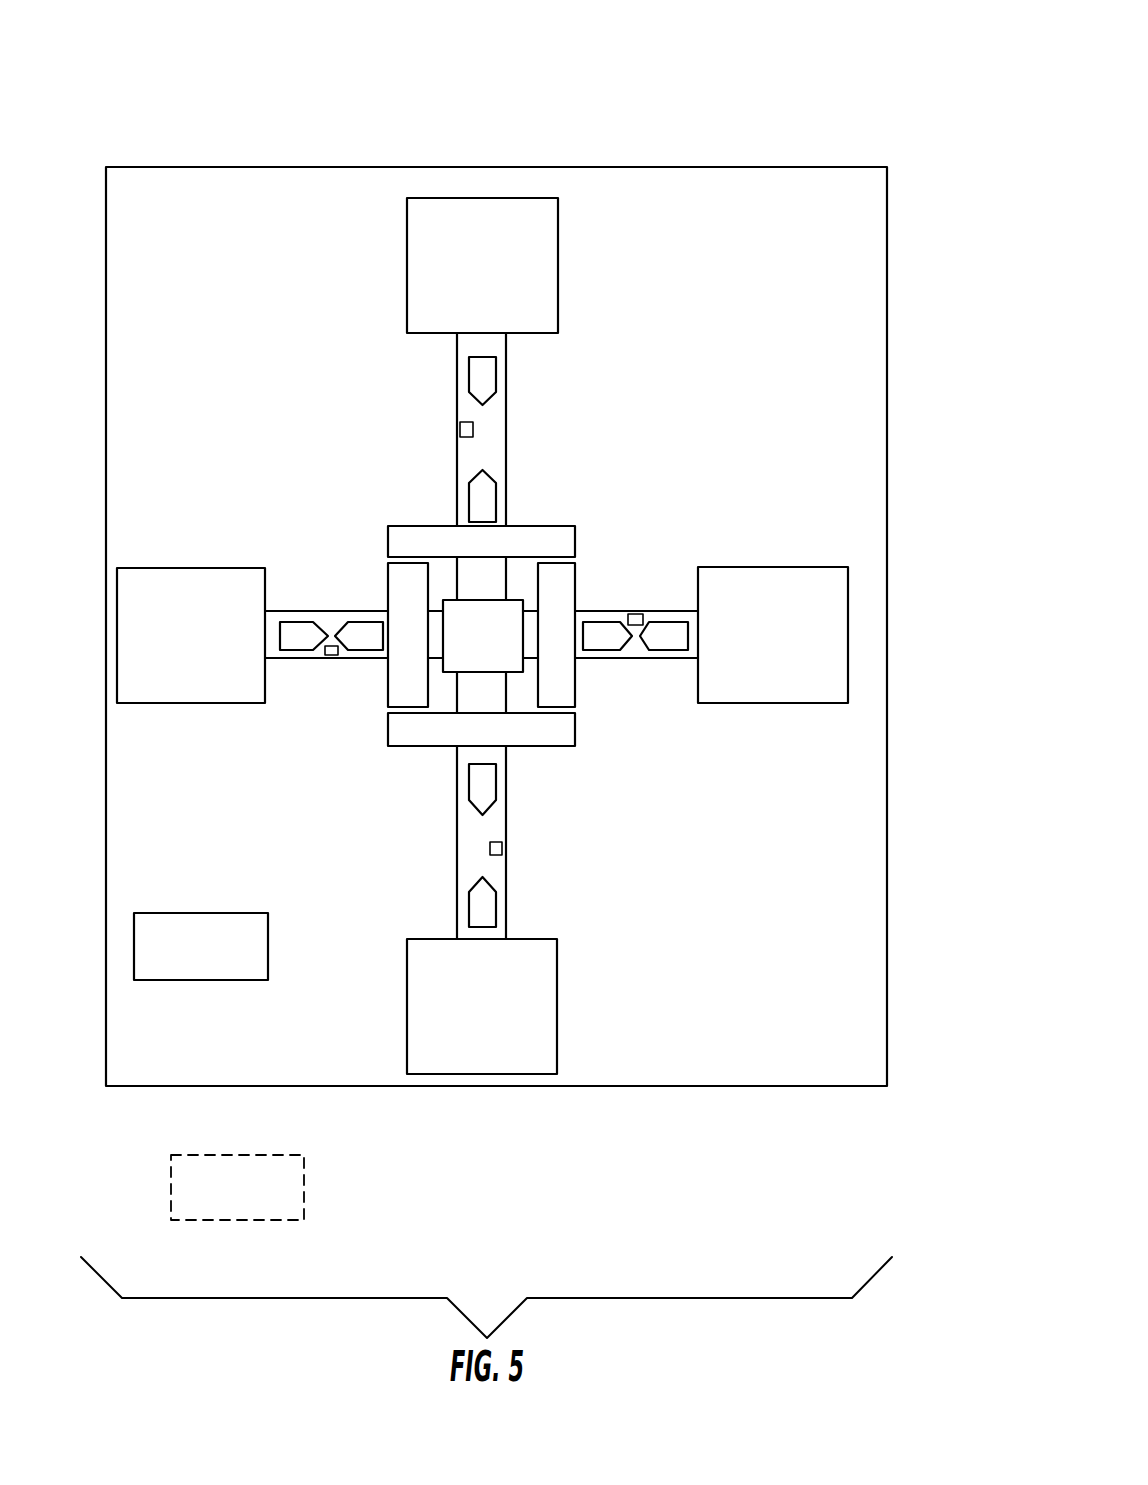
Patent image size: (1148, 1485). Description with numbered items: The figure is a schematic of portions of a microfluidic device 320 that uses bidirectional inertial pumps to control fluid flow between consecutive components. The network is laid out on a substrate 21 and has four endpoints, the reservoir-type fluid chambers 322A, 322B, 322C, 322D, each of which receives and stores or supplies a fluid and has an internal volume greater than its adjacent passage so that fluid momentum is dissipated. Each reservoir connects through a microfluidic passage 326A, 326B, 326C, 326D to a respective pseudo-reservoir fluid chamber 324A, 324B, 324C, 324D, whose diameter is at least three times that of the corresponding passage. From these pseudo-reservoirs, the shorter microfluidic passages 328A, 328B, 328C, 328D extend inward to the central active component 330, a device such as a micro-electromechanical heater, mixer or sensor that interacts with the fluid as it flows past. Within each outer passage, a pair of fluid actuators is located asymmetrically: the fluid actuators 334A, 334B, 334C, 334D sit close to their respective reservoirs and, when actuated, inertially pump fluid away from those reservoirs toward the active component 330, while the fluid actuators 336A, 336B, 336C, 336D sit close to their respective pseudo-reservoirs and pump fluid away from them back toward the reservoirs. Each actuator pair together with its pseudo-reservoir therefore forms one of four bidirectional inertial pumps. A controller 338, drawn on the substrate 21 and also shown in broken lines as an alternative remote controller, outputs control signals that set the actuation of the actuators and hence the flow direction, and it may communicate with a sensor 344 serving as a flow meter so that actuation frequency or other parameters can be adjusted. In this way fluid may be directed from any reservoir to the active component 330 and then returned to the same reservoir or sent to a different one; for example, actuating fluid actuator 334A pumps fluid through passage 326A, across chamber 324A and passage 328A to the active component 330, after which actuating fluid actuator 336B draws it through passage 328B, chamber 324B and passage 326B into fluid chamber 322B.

The microfluidic device 320 is at (185, 84).
The substrate 21 is at (106, 314).
The fluid chamber 322A is at (144, 567).
The fluid chamber 322B is at (493, 198).
The fluid chamber 322C is at (848, 627).
The fluid chamber 322D is at (557, 1057).
The fluid chamber 324A is at (386, 577).
The fluid chamber 324B is at (567, 526).
The fluid chamber 324C is at (580, 697).
The fluid chamber 324D is at (400, 748).
The microfluidic passage 326A is at (303, 659).
The microfluidic passage 326B is at (506, 406).
The microfluidic passage 326C is at (638, 659).
The microfluidic passage 326D is at (457, 868).
The microfluidic passage 328A is at (438, 613).
The microfluidic passage 328B is at (507, 580).
The microfluidic passage 328C is at (530, 602).
The microfluidic passage 328D is at (507, 702).
The active component 330 is at (467, 664).
The fluid actuator 334A is at (308, 622).
The fluid actuator 334B is at (469, 375).
The fluid actuator 334C is at (668, 622).
The fluid actuator 334D is at (469, 910).
The fluid actuator 336A is at (357, 622).
The fluid actuator 336B is at (469, 500).
The fluid actuator 336C is at (602, 622).
The fluid actuator 336D is at (469, 785).
The controller 338 is at (187, 980).
The sensor 344 is at (460, 428).